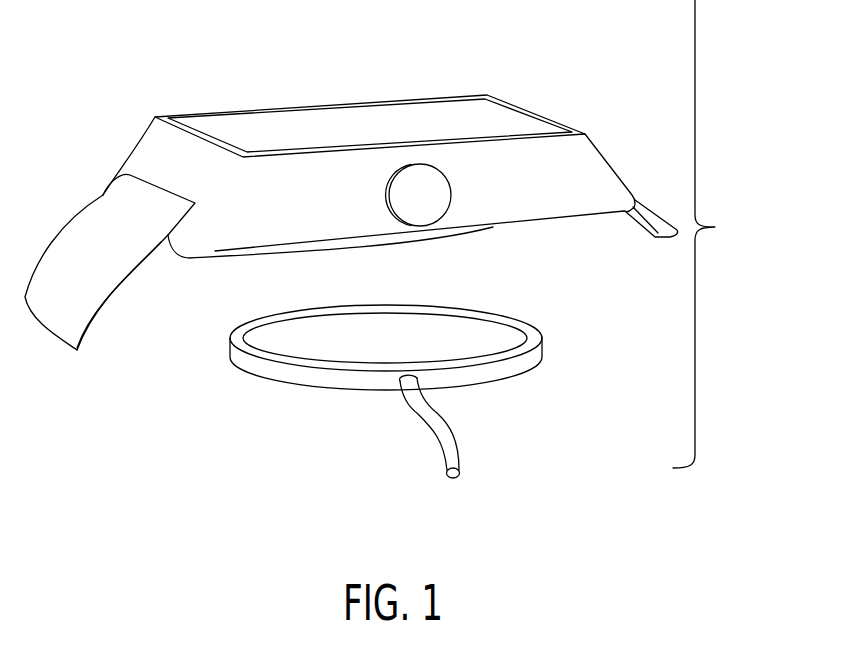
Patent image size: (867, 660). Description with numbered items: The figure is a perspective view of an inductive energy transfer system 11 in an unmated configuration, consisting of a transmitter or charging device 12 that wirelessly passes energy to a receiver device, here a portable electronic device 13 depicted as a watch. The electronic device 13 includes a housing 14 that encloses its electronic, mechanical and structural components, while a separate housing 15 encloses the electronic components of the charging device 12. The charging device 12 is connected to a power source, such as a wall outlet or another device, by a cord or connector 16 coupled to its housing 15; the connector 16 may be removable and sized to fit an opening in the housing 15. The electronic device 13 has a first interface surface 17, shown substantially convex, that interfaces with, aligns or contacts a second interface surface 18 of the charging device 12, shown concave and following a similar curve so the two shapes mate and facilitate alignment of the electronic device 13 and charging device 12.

The inductive energy transfer system 11 is at (762, 191).
The charging device 12 is at (394, 402).
The portable electronic device 13 is at (351, 185).
The housing 14 is at (155, 115).
The housing 15 is at (408, 372).
The cord or connector 16 is at (441, 477).
The first interface surface 17 is at (472, 238).
The second interface surface 18 is at (532, 322).